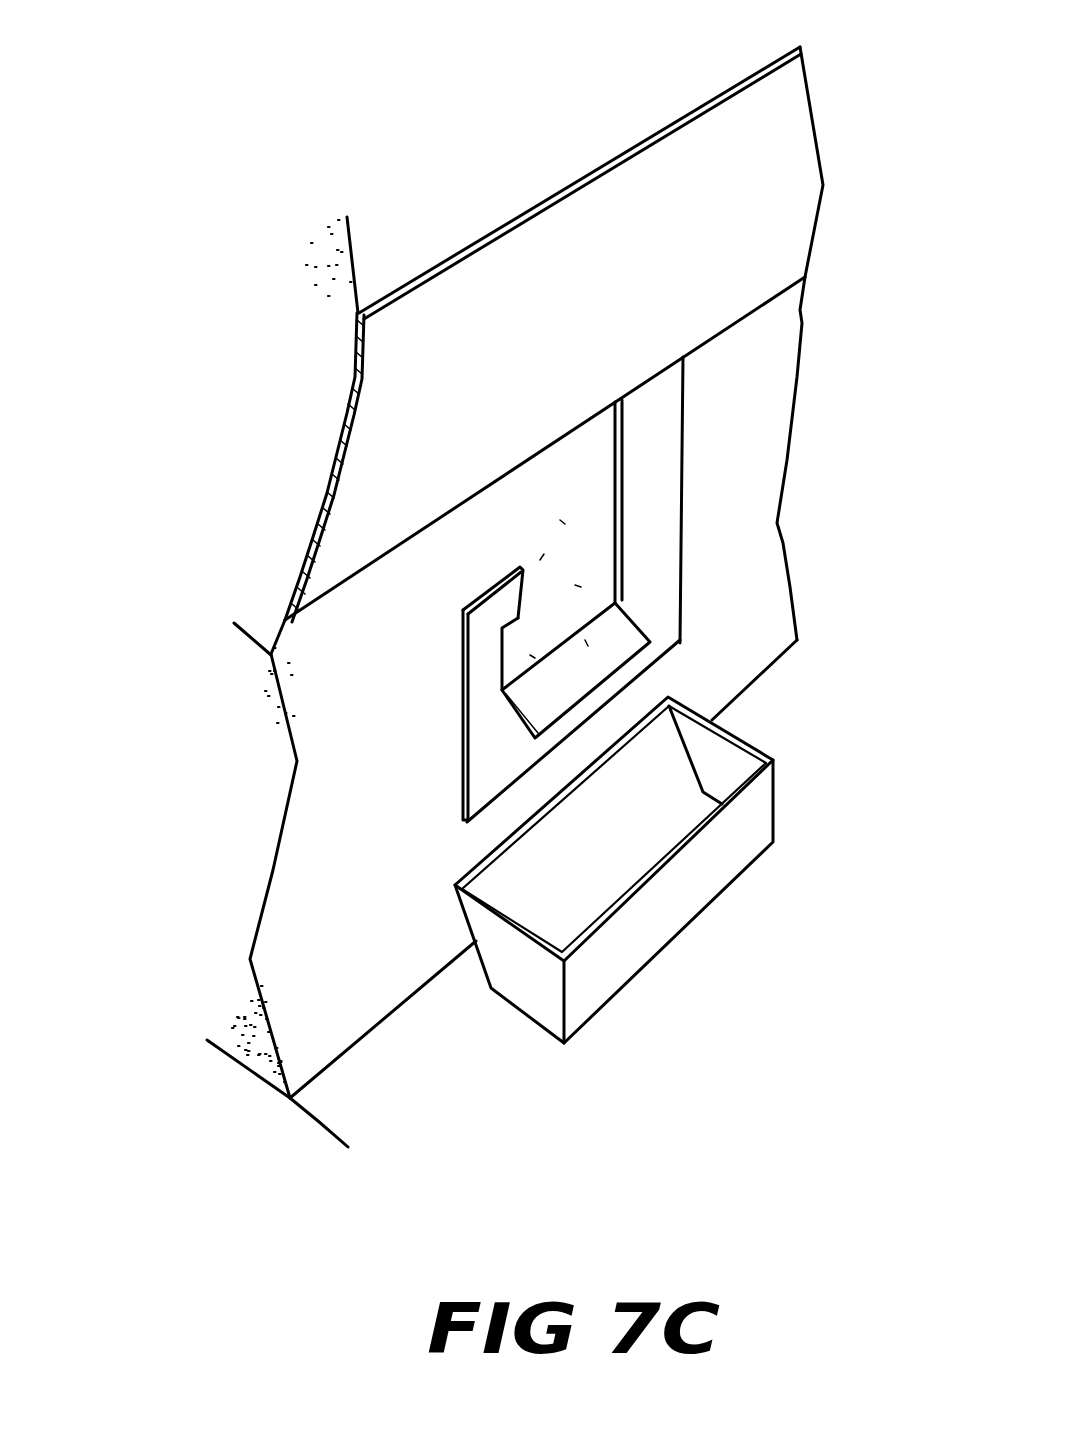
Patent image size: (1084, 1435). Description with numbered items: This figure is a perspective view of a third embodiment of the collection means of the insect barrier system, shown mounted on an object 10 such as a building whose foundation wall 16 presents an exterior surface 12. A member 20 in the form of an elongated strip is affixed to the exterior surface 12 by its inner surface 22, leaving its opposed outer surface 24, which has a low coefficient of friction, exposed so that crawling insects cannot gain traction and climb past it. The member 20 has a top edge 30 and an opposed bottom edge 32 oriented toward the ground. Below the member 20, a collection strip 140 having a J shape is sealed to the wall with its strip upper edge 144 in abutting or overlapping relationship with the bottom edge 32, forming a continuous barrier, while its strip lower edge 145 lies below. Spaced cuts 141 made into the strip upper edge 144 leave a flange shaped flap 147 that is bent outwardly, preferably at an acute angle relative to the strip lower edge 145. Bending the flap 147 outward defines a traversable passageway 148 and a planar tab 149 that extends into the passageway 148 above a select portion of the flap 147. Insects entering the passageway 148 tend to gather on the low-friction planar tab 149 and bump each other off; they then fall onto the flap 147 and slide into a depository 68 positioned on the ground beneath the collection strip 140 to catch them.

The object 10 is at (273, 872).
The exterior surface 12 is at (265, 933).
The foundation wall 16 is at (269, 993).
The member 20 is at (375, 433).
The inner surface 22 is at (353, 380).
The outer surface 24 is at (343, 530).
The top edge 30 is at (533, 210).
The bottom edge 32 is at (720, 337).
The depository 68 is at (685, 885).
The collection strip 140 is at (650, 503).
The spaced cuts 141 is at (622, 473).
The strip upper edge 144 is at (647, 384).
The strip lower edge 145 is at (672, 652).
The flap 147 is at (597, 663).
The passageway 148 is at (557, 607).
The planar tab 149 is at (504, 623).